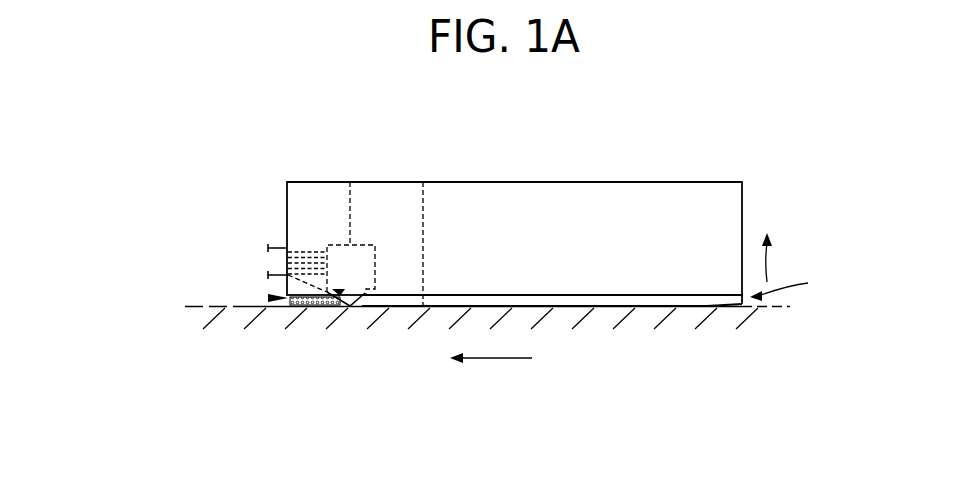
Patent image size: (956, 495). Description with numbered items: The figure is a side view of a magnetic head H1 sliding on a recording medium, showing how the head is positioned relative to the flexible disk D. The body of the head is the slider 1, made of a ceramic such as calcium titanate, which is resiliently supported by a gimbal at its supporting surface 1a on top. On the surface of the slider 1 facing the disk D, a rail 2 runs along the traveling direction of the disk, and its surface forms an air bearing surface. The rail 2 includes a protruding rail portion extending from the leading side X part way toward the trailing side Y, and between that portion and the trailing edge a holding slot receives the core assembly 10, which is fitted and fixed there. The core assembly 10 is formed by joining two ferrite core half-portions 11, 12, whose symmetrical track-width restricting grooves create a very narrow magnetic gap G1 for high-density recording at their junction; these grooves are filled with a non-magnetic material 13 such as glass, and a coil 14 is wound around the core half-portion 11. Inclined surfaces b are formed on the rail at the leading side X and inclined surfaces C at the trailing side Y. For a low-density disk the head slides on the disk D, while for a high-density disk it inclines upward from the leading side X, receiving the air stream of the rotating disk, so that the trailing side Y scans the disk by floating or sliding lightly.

The slider 1 is at (615, 200).
The supporting surface 1a is at (523, 182).
The rail 2 is at (642, 303).
The core assembly 10 is at (404, 316).
The core half-portion 11 is at (307, 202).
The core half-portion 12 is at (408, 202).
The non-magnetic material 13 is at (318, 308).
The coil 14 is at (288, 263).
The magnetic head H1 is at (374, 162).
The magnetic gap G1 is at (350, 310).
The inclined surface C is at (292, 307).
The disk D is at (195, 305).
The leading side X is at (787, 285).
The trailing side Y is at (270, 299).
The inclined surface b is at (735, 308).